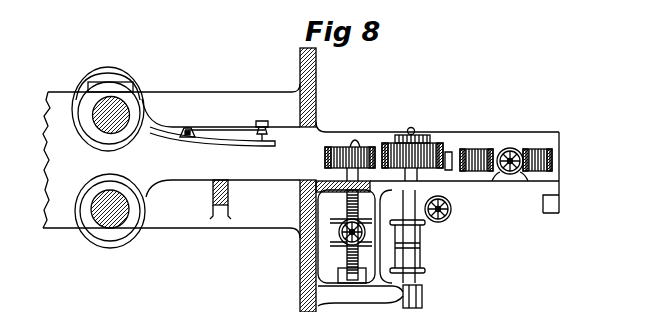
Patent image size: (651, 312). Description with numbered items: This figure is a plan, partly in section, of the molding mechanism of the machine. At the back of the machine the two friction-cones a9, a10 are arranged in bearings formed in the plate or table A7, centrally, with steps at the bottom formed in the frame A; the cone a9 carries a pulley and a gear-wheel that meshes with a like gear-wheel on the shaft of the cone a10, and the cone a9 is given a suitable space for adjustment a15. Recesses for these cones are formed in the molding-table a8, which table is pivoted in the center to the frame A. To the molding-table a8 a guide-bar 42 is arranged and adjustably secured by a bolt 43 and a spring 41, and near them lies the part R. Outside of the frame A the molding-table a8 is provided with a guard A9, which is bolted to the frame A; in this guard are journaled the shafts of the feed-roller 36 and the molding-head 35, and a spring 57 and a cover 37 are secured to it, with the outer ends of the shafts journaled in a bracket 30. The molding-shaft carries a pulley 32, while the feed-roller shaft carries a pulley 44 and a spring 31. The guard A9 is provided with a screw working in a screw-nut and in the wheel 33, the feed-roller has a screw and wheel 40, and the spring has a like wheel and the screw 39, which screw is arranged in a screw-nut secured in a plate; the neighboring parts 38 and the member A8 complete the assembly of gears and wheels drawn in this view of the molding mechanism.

The space for adjustment a15 is at (98, 72).
The friction-cone a9 is at (124, 105).
The friction-cone a10 is at (124, 200).
The molding-table a8 is at (212, 145).
The plate or table A7 is at (171, 161).
The block R is at (230, 195).
The frame A is at (317, 92).
The pulley 44 is at (300, 256).
The bolt 43 is at (190, 130).
The spring 41 is at (270, 133).
The guide-bar 42 is at (268, 144).
The feed-roller 36 is at (364, 146).
The molding-head 35 is at (416, 139).
The cover 37 is at (440, 146).
The spring 57 is at (576, 156).
The gear 38 is at (478, 149).
The top plate A8 is at (505, 133).
The screw 39 is at (518, 151).
The guard A9 is at (505, 187).
The wheel 33 is at (452, 212).
The spring 31 is at (346, 209).
The screw and wheel 40 is at (348, 242).
The pulley 32 is at (421, 246).
The bracket 30 is at (424, 296).